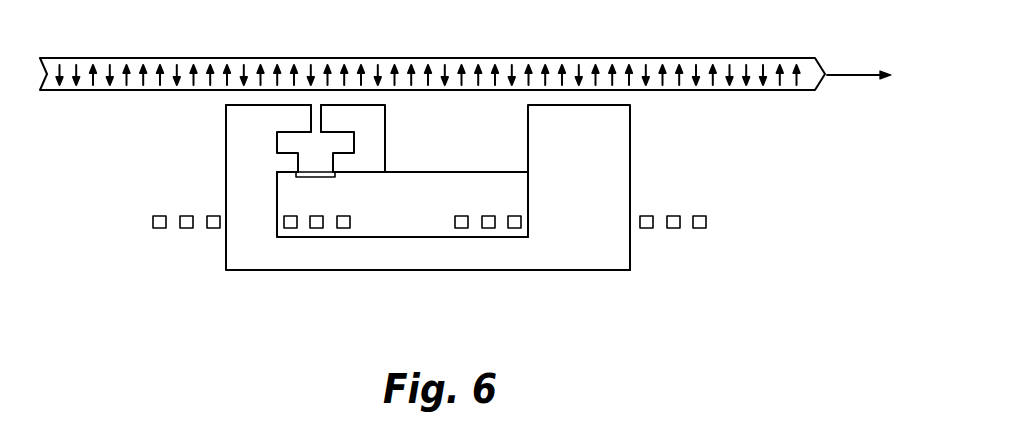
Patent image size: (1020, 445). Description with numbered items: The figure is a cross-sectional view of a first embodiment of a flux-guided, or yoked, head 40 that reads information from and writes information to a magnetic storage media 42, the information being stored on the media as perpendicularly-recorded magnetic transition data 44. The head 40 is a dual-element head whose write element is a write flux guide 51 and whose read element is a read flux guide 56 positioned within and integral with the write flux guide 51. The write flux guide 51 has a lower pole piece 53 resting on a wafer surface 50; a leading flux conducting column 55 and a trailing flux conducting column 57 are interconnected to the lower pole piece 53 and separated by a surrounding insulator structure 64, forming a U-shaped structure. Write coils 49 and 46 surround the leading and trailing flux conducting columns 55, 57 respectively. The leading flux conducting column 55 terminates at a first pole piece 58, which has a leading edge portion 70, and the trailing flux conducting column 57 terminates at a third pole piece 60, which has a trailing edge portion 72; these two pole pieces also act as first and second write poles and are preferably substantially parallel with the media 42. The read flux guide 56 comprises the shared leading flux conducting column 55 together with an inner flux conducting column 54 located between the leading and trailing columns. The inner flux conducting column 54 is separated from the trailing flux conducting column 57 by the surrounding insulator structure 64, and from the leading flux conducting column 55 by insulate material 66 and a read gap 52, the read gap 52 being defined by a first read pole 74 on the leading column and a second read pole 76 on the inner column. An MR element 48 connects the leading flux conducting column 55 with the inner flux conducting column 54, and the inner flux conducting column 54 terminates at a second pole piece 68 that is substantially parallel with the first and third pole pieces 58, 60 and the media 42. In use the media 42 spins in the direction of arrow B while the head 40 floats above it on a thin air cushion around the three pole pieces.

The flux-guided head 40 is at (656, 272).
The magnetic storage media 42 is at (765, 62).
The perpendicularly-recorded magnetic transition data 44 is at (697, 80).
The write coil 46 is at (708, 221).
The MR element 48 is at (317, 176).
The write coil 49 is at (161, 231).
The wafer surface 50 is at (492, 270).
The write flux guide 51 is at (587, 250).
The read gap 52 is at (314, 116).
The lower pole piece 53 is at (310, 256).
The inner flux conducting column 54 is at (380, 162).
The leading flux conducting column 55 is at (248, 226).
The read flux guide 56 is at (373, 145).
The trailing flux conducting column 57 is at (605, 176).
The first pole piece 58 is at (305, 114).
The third pole piece 60 is at (576, 105).
The surrounding insulator structure 64 is at (477, 184).
The insulate material 66 is at (294, 143).
The second pole piece 68 is at (345, 105).
The leading edge portion 70 is at (250, 105).
The trailing edge portion 72 is at (633, 110).
The first read pole 74 is at (300, 119).
The second read pole 76 is at (323, 117).